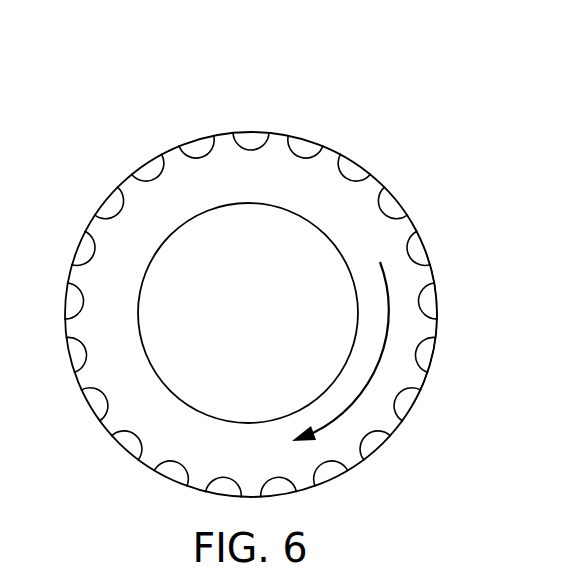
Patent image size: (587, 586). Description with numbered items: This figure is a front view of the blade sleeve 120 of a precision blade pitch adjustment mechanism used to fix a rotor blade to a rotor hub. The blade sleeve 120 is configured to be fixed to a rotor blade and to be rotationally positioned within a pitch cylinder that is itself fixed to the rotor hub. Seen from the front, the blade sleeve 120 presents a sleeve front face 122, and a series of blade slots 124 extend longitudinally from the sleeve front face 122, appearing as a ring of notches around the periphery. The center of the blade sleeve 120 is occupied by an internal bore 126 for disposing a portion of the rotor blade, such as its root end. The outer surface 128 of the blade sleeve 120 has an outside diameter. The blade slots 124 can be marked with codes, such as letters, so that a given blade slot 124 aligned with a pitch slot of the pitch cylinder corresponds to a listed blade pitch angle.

The blade sleeve 120 is at (284, 275).
The sleeve front face 122 is at (104, 108).
The blade slots 124 is at (105, 197).
The internal bore 126 is at (272, 273).
The outer surface 128 is at (432, 270).